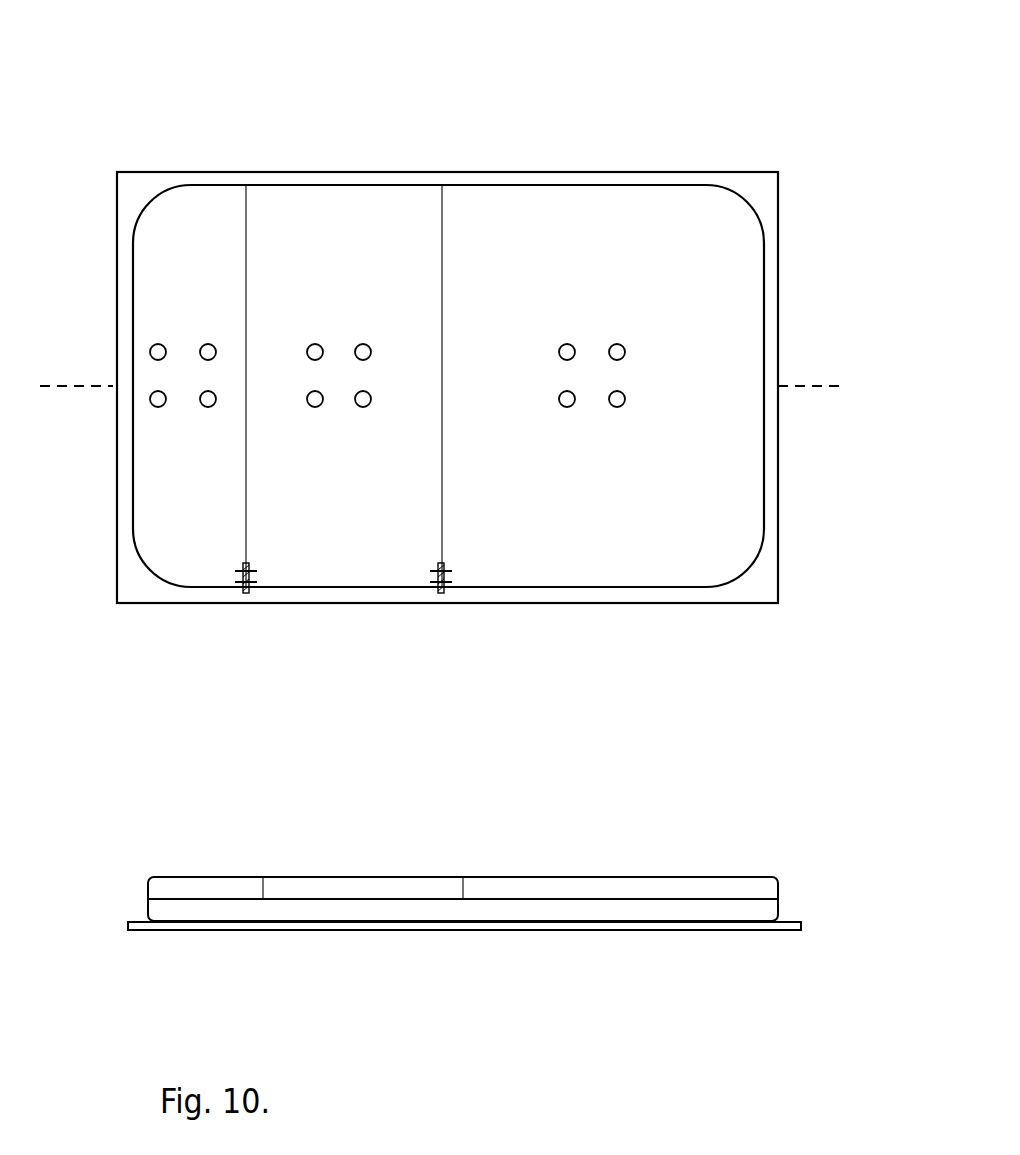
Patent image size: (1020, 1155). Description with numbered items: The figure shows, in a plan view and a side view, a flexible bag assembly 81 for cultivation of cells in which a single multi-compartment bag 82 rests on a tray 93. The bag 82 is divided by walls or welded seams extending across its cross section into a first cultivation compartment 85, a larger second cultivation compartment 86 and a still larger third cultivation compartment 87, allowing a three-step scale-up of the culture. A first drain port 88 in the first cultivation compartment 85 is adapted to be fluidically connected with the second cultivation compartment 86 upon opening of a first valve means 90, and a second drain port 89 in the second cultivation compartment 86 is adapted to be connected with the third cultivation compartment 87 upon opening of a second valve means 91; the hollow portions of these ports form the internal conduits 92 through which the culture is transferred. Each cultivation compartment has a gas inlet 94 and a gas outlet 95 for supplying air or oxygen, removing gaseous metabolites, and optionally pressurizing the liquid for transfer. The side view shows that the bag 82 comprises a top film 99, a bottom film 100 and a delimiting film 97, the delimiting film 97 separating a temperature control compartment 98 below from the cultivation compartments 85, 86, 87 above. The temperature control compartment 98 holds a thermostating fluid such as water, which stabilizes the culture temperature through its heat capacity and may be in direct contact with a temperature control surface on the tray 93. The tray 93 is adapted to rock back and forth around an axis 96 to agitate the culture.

The flexible bag assembly 81 is at (432, 95).
The bag 82 is at (307, 185).
The first cultivation compartment 85 is at (186, 232).
The second cultivation compartment 86 is at (387, 215).
The third cultivation compartment 87 is at (663, 215).
The first drain port 88 is at (233, 573).
The second drain port 89 is at (422, 573).
The first valve means 90 is at (247, 593).
The second valve means 91 is at (439, 593).
The internal conduits 92 is at (343, 536).
The tray 93 is at (742, 603).
The gas inlet 94 is at (559, 351).
The gas outlet 95 is at (215, 356).
The axis 96 is at (825, 388).
The delimiting film 97 is at (357, 900).
The temperature control compartment 98 is at (525, 907).
The top film 99 is at (695, 878).
The bottom film 100 is at (743, 923).